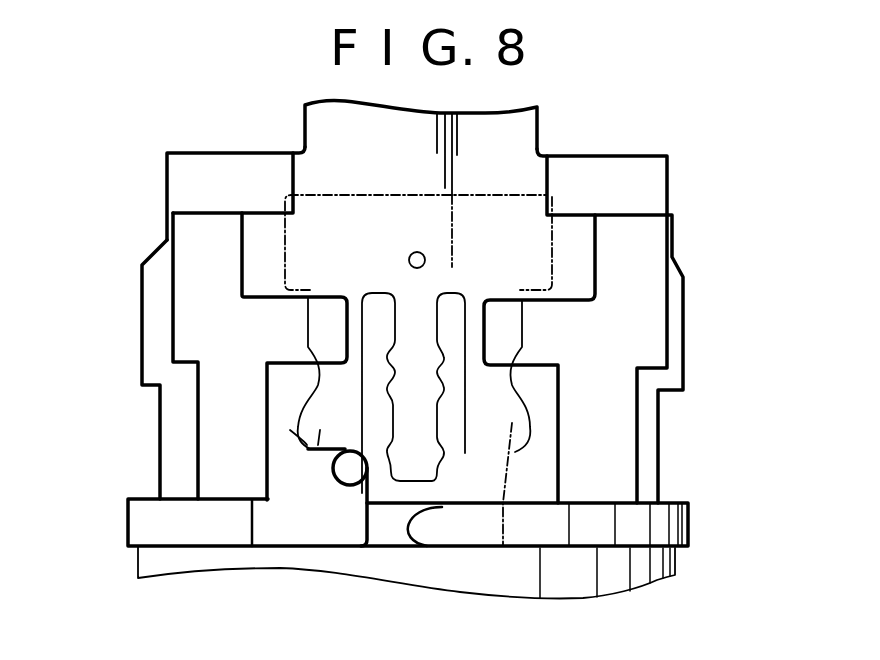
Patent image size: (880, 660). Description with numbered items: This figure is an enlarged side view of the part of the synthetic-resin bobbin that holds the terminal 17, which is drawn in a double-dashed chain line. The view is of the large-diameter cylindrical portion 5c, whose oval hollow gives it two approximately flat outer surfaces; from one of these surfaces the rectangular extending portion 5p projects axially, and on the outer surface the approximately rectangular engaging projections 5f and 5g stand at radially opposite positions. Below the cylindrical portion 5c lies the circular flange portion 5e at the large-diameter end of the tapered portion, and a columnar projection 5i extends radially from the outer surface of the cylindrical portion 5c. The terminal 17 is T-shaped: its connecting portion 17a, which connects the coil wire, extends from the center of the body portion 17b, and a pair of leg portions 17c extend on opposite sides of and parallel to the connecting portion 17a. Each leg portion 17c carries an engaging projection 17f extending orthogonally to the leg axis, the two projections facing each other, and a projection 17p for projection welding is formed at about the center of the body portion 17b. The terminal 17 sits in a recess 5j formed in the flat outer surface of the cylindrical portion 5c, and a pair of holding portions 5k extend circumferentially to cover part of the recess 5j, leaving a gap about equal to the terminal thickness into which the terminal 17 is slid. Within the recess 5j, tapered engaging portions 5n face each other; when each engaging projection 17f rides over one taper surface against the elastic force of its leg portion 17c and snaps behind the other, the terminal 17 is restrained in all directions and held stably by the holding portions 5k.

The extending portion 5p is at (318, 127).
The large-diameter cylindrical portion 5c is at (183, 182).
The holding portion 5k is at (333, 310).
The engaging projection 5g is at (142, 331).
The engaging projection 5f is at (684, 352).
The recess 5j is at (517, 383).
The engaging portion 5n is at (316, 398).
The columnar projection 5i is at (352, 474).
The flange portion 5e is at (658, 530).
The terminal 17 is at (490, 192).
The connecting portion 17a is at (404, 467).
The body portion 17b is at (540, 243).
The leg portion 17c is at (328, 378).
The engaging projection 17f is at (314, 418).
The projection 17p is at (423, 255).